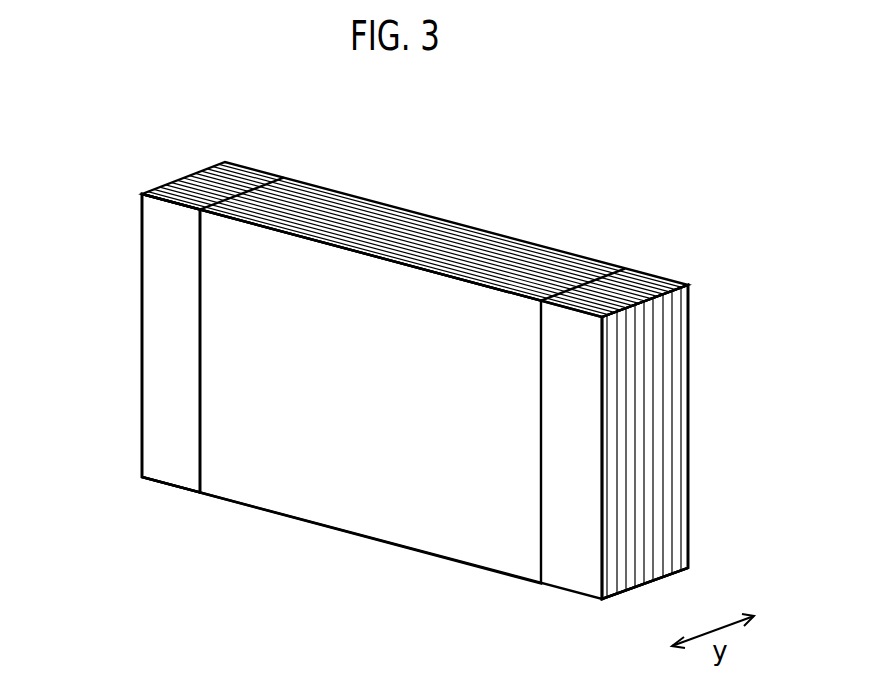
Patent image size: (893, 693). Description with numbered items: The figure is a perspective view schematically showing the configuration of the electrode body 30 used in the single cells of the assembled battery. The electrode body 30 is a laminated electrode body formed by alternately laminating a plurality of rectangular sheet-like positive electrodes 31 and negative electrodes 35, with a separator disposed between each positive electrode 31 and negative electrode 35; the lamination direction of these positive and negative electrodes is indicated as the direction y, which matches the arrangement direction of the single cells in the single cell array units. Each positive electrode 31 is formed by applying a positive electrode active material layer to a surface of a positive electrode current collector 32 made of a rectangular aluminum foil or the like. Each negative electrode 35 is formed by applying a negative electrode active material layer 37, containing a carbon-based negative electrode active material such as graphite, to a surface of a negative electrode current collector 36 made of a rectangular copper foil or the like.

The electrode body 30 is at (688, 142).
The positive electrode 31 is at (691, 350).
The positive electrode current collector 32 is at (691, 417).
The negative electrode 35 is at (139, 322).
The negative electrode current collector 36 is at (139, 380).
The negative electrode active material layer 37 is at (350, 522).